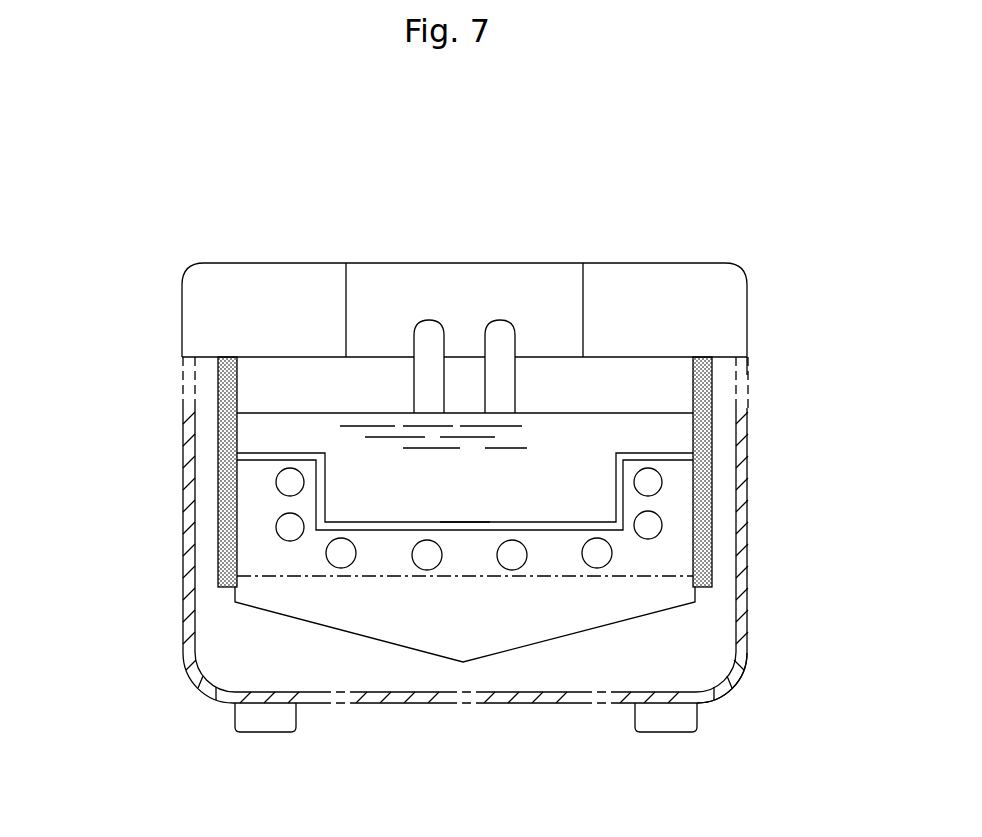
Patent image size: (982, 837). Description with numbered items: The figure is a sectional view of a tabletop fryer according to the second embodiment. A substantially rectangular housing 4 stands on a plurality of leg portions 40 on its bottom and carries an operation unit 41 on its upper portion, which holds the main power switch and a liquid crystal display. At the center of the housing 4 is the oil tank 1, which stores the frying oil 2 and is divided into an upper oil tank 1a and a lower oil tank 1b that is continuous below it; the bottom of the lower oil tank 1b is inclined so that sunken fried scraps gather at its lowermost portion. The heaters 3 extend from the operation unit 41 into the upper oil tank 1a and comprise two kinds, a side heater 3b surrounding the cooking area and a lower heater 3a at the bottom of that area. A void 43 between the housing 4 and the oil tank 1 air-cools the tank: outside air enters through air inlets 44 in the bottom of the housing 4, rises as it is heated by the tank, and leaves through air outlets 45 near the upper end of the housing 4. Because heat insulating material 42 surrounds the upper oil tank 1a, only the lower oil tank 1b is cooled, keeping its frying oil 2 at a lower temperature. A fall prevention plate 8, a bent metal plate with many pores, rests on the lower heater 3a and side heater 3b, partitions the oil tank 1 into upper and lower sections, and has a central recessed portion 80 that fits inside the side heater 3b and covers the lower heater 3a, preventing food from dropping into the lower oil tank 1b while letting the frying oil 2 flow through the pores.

The oil tank 1 is at (408, 659).
The upper oil tank 1a is at (682, 559).
The lower oil tank 1b is at (307, 612).
The frying oil 2 is at (585, 433).
The heaters 3 is at (515, 192).
The lower heater 3a is at (498, 320).
The side heater 3b is at (428, 320).
The housing 4 is at (495, 555).
The fall prevention plate 8 is at (280, 453).
The leg portions 40 is at (280, 725).
The operation unit 41 is at (685, 263).
The heat insulating material 42 is at (223, 432).
The void 43 is at (732, 685).
The air inlets 44 is at (333, 694).
The air outlets 45 is at (190, 374).
The recessed portion 80 is at (466, 512).